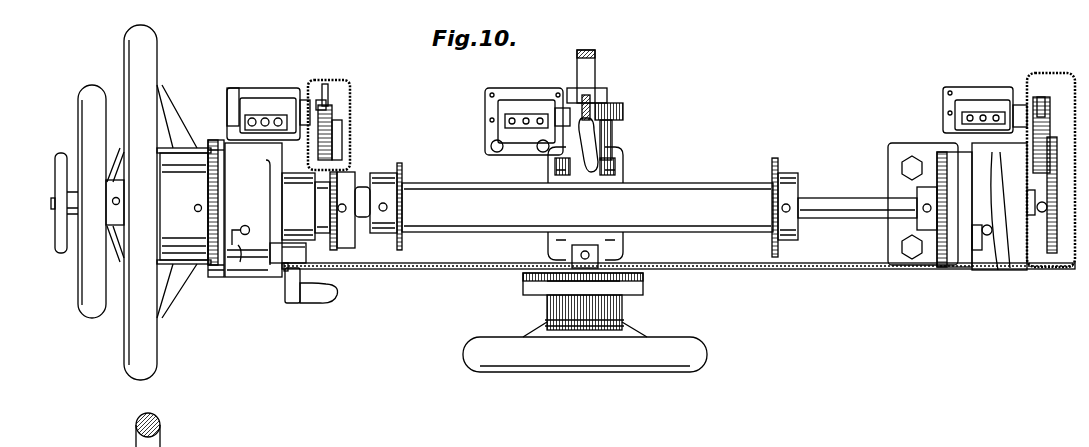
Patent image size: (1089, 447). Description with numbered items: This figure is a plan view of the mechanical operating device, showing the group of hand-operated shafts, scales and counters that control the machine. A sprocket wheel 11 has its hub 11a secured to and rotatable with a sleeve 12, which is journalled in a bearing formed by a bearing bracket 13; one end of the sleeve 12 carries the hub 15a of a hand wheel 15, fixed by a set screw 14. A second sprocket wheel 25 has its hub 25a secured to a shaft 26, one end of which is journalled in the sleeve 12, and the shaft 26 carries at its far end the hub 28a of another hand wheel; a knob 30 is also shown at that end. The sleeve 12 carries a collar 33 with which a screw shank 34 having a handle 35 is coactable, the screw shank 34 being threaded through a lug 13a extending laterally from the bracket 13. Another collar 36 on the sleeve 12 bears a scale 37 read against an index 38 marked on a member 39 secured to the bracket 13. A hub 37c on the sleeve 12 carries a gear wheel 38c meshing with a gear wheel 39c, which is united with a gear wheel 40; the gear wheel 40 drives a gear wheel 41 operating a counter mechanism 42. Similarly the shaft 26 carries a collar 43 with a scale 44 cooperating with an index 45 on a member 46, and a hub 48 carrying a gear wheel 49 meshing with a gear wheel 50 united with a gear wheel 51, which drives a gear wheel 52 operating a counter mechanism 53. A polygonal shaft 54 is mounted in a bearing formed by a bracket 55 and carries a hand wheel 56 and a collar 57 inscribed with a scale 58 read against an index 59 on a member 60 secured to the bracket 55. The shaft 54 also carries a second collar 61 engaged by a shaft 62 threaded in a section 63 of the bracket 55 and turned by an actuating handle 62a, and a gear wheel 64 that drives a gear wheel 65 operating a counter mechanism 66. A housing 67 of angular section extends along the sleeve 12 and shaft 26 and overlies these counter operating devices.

The second sprocket wheel 11 is at (403, 166).
The hub 11a is at (388, 206).
The sleeve 12 is at (455, 184).
The bearing bracket 13 is at (252, 314).
The lug 13a is at (300, 265).
The set screw 14 is at (194, 207).
The hand wheel 15 is at (158, 420).
The hub 15a is at (184, 201).
The sprocket wheel 25 is at (777, 260).
The hub 25a is at (787, 175).
The shaft 26 is at (842, 198).
The hub 28a is at (112, 212).
The knob 30 is at (62, 155).
The collar 33 is at (310, 240).
The screw shank 34 is at (286, 270).
The handle 35 is at (318, 300).
The collar 36 is at (207, 140).
The scale 37 is at (213, 138).
The hub 37c is at (345, 250).
The index 38 is at (237, 226).
The gear wheel 38c is at (325, 242).
The member 39 is at (240, 262).
The gear wheel 39c is at (347, 142).
The gear wheel 40 is at (352, 172).
The gear wheel 41 is at (330, 108).
The counter mechanism 42 is at (268, 116).
The collar 43 is at (896, 268).
The scale 44 is at (960, 252).
The index 45 is at (976, 243).
The member 46 is at (1004, 232).
The hub 48 is at (1040, 270).
The gear wheel 49 is at (1053, 252).
The gear wheel 50 is at (1055, 90).
The gear wheel 51 is at (1040, 130).
The gear wheel 52 is at (1043, 100).
The counter mechanism 53 is at (982, 111).
The shaft 54 is at (596, 66).
The bracket 55 is at (630, 171).
The hand wheel 56 is at (702, 357).
The collar 57 is at (645, 290).
The scale 58 is at (645, 278).
The index 59 is at (580, 280).
The member 60 is at (572, 260).
The second collar 61 is at (556, 164).
The shaft 62 is at (620, 165).
The actuating handle 62a is at (612, 128).
The section 63 is at (597, 146).
The gear wheel 64 is at (624, 110).
The gear wheel 65 is at (583, 103).
The counter mechanism 66 is at (522, 114).
The housing 67 is at (465, 270).